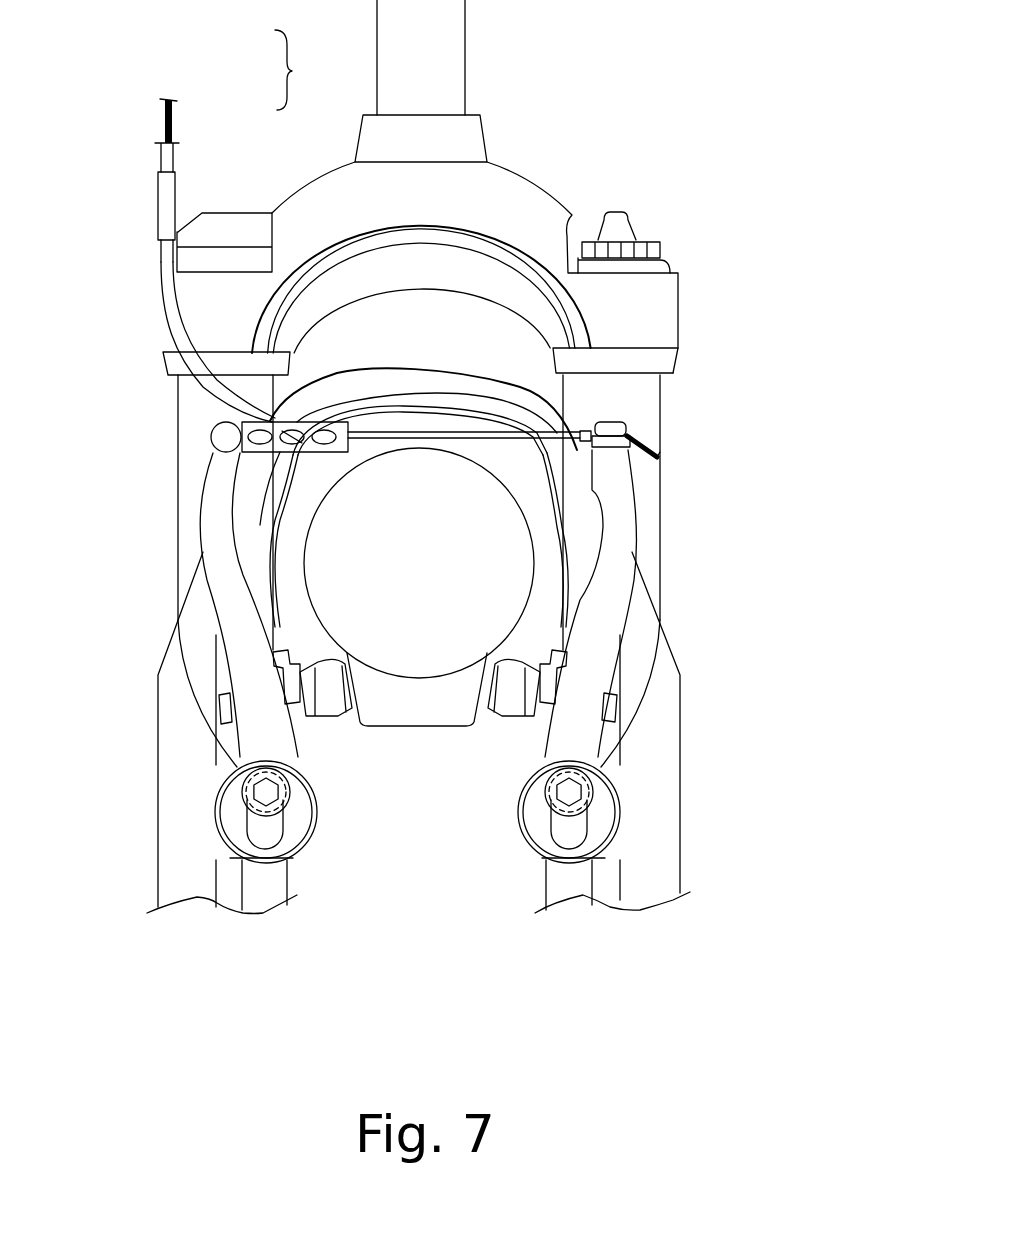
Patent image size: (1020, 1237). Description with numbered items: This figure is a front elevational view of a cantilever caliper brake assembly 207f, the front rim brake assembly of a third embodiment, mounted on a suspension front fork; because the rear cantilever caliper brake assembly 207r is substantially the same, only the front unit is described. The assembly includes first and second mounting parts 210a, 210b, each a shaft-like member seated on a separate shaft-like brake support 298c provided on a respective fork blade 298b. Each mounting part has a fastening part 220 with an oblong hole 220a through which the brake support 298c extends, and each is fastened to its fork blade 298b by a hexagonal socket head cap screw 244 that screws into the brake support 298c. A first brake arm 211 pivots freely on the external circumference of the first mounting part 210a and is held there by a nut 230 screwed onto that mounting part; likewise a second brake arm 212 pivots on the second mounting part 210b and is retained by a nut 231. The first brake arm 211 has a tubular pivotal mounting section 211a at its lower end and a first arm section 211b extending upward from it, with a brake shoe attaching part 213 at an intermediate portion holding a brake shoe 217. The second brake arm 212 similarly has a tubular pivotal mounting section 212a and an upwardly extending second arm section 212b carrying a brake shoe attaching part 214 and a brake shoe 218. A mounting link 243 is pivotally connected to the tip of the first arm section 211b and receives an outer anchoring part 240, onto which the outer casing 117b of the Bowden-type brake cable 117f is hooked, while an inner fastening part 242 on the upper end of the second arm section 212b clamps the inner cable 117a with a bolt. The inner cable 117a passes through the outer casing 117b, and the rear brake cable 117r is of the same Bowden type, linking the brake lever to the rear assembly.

The inner cable 117a is at (172, 103).
The outer casing 117b is at (173, 158).
The front brake cable 117f is at (263, 223).
The rear brake cable 117r is at (263, 223).
The cantilever caliper brake assembly 207f is at (627, 415).
The rear cantilever caliper brake assembly 207r is at (448, 638).
The first mounting part 210a is at (228, 807).
The second mounting part 210b is at (620, 823).
The first brake arm 211 is at (218, 563).
The pivotal mounting section 211a is at (215, 774).
The first arm section 211b is at (227, 597).
The second brake arm 212 is at (622, 545).
The pivotal mounting section 212a is at (600, 763).
The second arm section 212b is at (603, 602).
The brake shoe attaching part 213 is at (275, 690).
The brake shoe attaching part 214 is at (550, 668).
The brake shoe 217 is at (330, 707).
The brake shoe 218 is at (505, 707).
The fastening part 220 is at (262, 838).
The oblong hole 220a is at (297, 850).
The nut 230 is at (309, 860).
The nut 231 is at (513, 827).
The outer anchoring part 240 is at (210, 385).
The inner fastening part 242 is at (627, 428).
The mounting link 243 is at (293, 421).
The hexagonal socket head cap screw 244 is at (218, 767).
The fork blade 298b is at (168, 735).
The brake support 298c is at (217, 837).